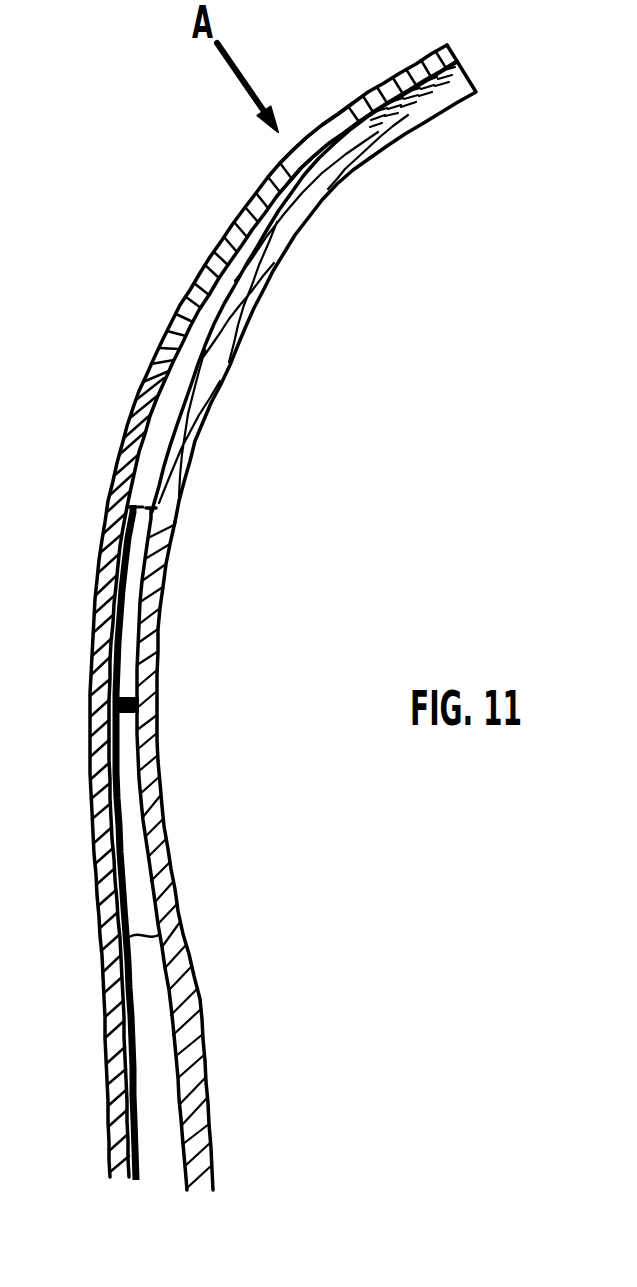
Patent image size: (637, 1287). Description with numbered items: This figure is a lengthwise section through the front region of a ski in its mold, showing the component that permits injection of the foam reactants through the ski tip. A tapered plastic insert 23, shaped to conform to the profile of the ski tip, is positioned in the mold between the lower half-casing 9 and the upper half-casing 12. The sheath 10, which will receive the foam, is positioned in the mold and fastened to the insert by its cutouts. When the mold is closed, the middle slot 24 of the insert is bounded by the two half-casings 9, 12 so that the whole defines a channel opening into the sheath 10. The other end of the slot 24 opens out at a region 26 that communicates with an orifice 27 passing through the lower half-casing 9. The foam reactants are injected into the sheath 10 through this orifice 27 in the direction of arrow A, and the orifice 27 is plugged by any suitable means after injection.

The lower half-casing 9 is at (103, 795).
The sheath 10 is at (122, 968).
The upper half-casing 12 is at (158, 813).
The insert 23 is at (413, 127).
The slot 24 is at (190, 352).
The region 26 is at (293, 192).
The orifice 27 is at (283, 172).